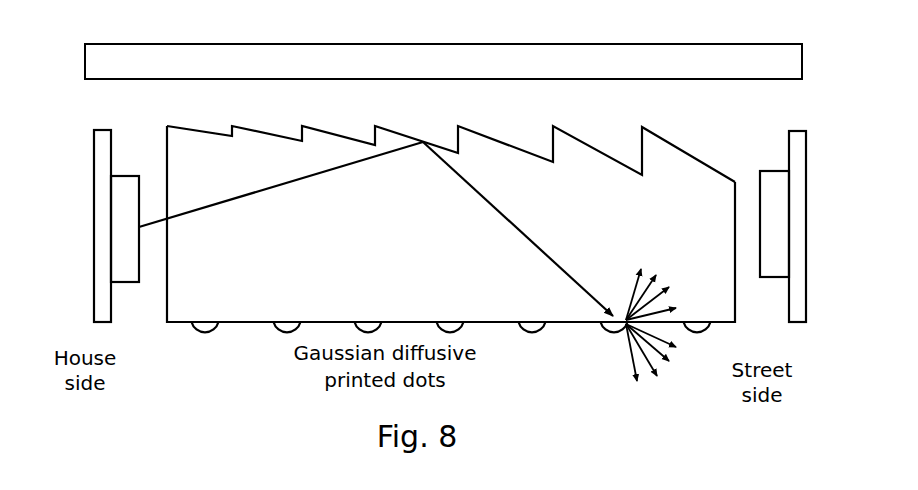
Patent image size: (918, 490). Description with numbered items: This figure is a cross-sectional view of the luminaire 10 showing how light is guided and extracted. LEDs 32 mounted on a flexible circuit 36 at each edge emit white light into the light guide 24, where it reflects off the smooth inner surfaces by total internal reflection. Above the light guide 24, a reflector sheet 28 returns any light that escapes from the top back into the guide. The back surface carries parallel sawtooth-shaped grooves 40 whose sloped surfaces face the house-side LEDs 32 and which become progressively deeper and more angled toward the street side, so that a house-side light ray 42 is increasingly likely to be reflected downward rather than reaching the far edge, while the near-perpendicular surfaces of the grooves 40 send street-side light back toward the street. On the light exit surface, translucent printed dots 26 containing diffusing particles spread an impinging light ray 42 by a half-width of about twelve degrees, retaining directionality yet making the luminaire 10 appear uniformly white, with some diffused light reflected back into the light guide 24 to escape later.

The luminaire 10 is at (64, 91).
The light guide 24 is at (348, 247).
The printed dots 26 is at (543, 336).
The reflector sheet 28 is at (393, 44).
The LEDs 32 is at (125, 176).
The flexible circuit 36 is at (94, 212).
The grooves 40 is at (598, 143).
The light ray 42 is at (519, 227).